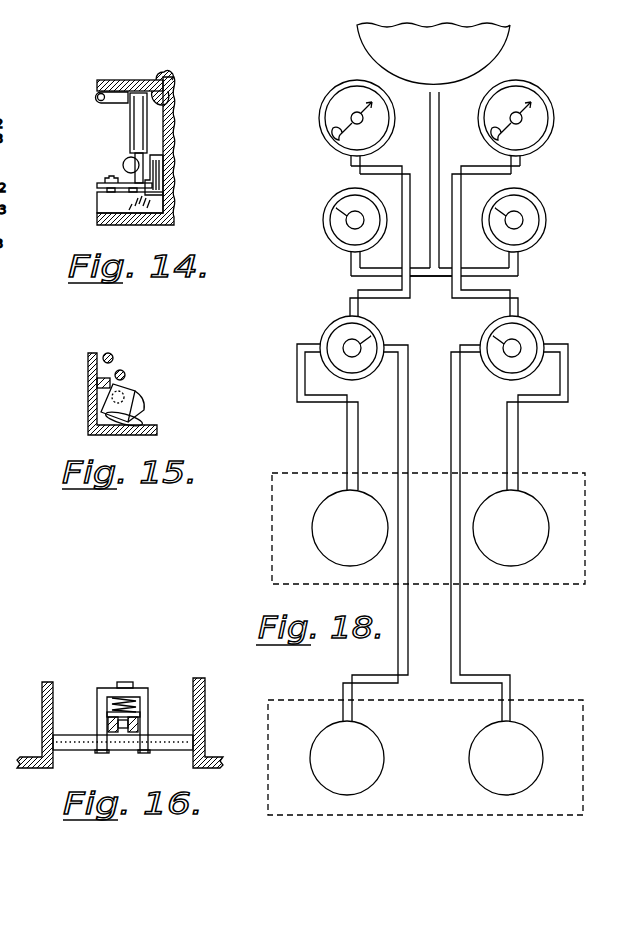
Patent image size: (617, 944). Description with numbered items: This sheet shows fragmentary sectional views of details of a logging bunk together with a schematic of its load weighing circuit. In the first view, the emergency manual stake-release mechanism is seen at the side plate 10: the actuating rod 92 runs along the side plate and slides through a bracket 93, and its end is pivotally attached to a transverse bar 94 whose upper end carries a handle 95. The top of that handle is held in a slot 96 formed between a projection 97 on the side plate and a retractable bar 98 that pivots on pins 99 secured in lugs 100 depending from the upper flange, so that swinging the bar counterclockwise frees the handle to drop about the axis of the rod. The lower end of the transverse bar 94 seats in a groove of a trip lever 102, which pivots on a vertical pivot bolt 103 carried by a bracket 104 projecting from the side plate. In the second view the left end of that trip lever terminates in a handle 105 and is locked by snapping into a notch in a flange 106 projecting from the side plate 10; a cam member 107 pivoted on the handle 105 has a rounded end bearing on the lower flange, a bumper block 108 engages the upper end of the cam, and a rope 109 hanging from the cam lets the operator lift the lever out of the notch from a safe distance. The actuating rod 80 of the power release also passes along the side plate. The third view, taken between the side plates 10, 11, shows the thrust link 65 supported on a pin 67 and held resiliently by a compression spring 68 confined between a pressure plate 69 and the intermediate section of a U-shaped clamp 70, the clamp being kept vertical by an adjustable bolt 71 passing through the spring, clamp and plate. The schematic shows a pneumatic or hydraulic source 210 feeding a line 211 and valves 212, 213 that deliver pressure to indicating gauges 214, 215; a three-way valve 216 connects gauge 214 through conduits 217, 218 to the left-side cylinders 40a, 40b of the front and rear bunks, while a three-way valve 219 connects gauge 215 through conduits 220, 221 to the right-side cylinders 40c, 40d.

In FIG. 14, the side plate 10 is at (174, 132).
In FIG. 15, the side plate 10 is at (88, 360).
In FIG. 16, the side plate 10 is at (205, 712).
In FIG. 16, the side plate 11 is at (42, 705).
In FIG. 18, the cylinder 40a is at (318, 505).
In FIG. 18, the cylinder 40b is at (315, 735).
In FIG. 18, the cylinder 40c is at (560, 498).
In FIG. 18, the cylinder 40d is at (555, 724).
In FIG. 16, the thrust link 65 is at (140, 745).
In FIG. 16, the pin 67 is at (169, 735).
In FIG. 16, the compression spring 68 is at (131, 703).
In FIG. 16, the pressure plate 69 is at (134, 712).
In FIG. 16, the U-shaped clamp 70 is at (98, 692).
In FIG. 16, the adjustable bolt 71 is at (128, 682).
In FIG. 15, the actuating rod 80 is at (113, 355).
In FIG. 14, the actuating rod 92 is at (127, 165).
In FIG. 15, the actuating rod 92 is at (125, 373).
In FIG. 14, the bracket 93 is at (153, 172).
In FIG. 14, the transverse bar 94 is at (138, 160).
In FIG. 14, the handle 95 is at (130, 127).
In FIG. 14, the slot 96 is at (165, 78).
In FIG. 14, the projection 97 is at (173, 110).
In FIG. 14, the retractable bar 98 is at (115, 102).
In FIG. 14, the pins 99 is at (97, 97).
In FIG. 14, the lugs 100 is at (122, 82).
In FIG. 14, the trip lever 102 is at (99, 185).
In FIG. 14, the pivot bolt 103 is at (106, 178).
In FIG. 14, the bracket 104 is at (100, 205).
In FIG. 15, the handle 105 is at (125, 392).
In FIG. 15, the flange 106 is at (140, 405).
In FIG. 15, the cam member 107 is at (100, 400).
In FIG. 15, the bumper block 108 is at (97, 382).
In FIG. 15, the rope 109 is at (142, 421).
In FIG. 18, the source of pneumatic or hydraulic pressure 210 is at (510, 40).
In FIG. 18, the main conduit 211 is at (440, 146).
In FIG. 18, the valve 212 is at (331, 196).
In FIG. 18, the valve 213 is at (541, 196).
In FIG. 18, the pressure indicating gauge 214 is at (329, 90).
In FIG. 18, the pressure indicating gauge 215 is at (546, 90).
In FIG. 18, the three-way valve 216 is at (329, 322).
In FIG. 18, the conduit 217 is at (347, 431).
In FIG. 18, the conduit 218 is at (343, 679).
In FIG. 18, the three-way valve 219 is at (539, 322).
In FIG. 18, the conduit 220 is at (518, 431).
In FIG. 18, the conduit 221 is at (512, 679).